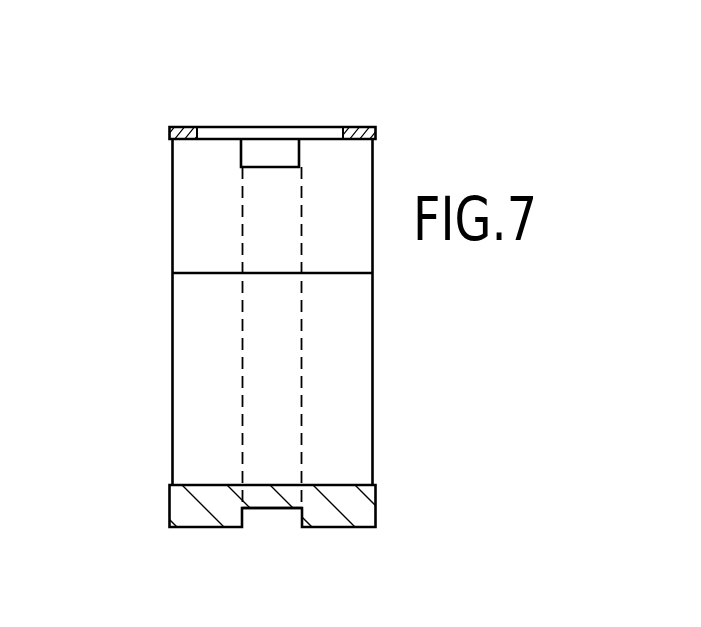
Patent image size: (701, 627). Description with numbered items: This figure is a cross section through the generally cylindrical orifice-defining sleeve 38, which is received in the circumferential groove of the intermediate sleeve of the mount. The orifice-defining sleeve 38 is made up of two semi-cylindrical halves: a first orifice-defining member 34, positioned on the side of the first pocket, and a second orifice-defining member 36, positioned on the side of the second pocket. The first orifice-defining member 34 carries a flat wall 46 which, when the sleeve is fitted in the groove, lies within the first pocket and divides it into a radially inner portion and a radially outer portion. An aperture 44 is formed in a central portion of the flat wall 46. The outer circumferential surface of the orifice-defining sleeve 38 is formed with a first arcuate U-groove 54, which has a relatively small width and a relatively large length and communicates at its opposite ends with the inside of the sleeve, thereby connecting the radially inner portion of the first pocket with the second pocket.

The orifice-defining sleeve 38 is at (148, 98).
The first orifice-defining member 34 is at (367, 120).
The second orifice-defining member 36 is at (360, 530).
The aperture 44 is at (342, 135).
The flat wall 46 is at (188, 130).
The first arcuate U-groove 54 is at (270, 509).